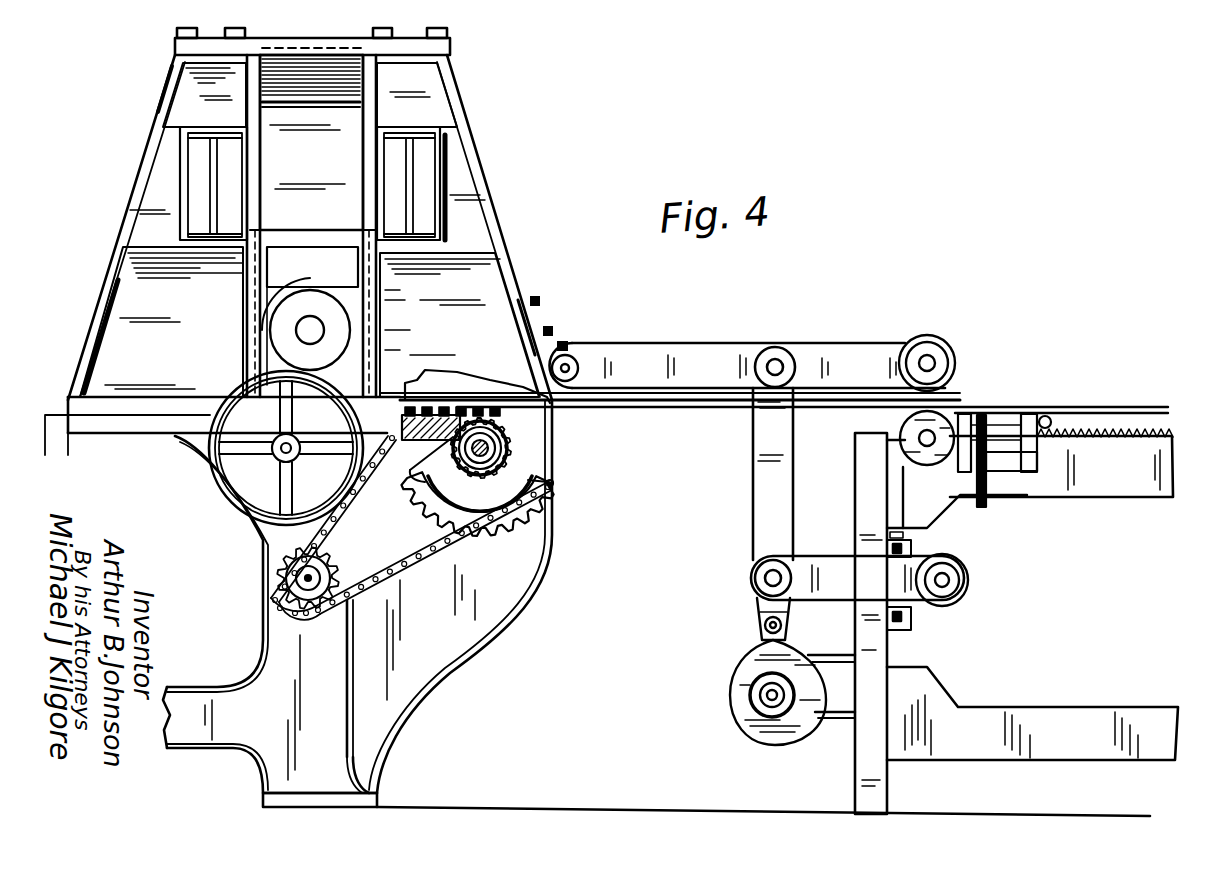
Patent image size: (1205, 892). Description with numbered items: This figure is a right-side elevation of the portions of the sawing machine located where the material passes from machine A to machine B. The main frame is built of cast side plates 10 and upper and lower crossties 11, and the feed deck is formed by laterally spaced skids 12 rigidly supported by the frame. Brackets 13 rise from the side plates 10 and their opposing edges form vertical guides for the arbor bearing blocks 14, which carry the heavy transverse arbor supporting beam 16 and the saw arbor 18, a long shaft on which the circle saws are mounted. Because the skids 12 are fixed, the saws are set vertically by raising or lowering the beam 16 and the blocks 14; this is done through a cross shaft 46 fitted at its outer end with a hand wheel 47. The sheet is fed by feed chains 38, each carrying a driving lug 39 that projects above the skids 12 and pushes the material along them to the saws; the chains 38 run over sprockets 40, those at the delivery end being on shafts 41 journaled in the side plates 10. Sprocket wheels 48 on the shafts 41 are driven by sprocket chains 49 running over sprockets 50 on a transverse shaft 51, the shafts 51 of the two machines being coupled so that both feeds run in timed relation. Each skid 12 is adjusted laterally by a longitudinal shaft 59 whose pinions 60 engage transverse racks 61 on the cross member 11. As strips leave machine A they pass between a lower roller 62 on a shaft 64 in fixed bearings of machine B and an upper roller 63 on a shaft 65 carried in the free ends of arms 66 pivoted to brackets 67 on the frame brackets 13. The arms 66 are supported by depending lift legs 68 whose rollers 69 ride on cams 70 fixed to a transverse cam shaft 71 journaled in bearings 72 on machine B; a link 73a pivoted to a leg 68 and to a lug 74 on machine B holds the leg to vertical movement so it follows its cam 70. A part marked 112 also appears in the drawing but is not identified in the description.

The side plates 10 is at (540, 640).
The crossties 11 is at (1110, 485).
The skids 12 is at (497, 395).
The brackets 13 is at (497, 222).
The arbor bearing blocks 14 is at (266, 343).
The arbor supporting beam 16 is at (311, 142).
The saw arbor 18 is at (300, 330).
The feed chains 38 is at (480, 448).
The driving lug 39 is at (437, 390).
The sprockets 40 is at (512, 422).
The sprocket shafts 41 is at (530, 470).
The cross shaft 46 is at (283, 451).
The wheel 47 is at (340, 492).
The sprocket wheels 48 is at (543, 507).
The sprocket chains 49 is at (433, 561).
The sprockets 50 is at (355, 598).
The transverse shaft 51 is at (306, 579).
The shaft 59 is at (1047, 420).
The pinions 60 is at (1049, 425).
The racks 61 is at (1142, 428).
The lower roller 62 is at (912, 462).
The upper roller 63 is at (928, 335).
The shaft 64 is at (937, 467).
The shaft 65 is at (930, 363).
The arms 66 is at (748, 365).
The brackets 67 is at (578, 344).
The lift legs 68 is at (773, 474).
The rollers 69 is at (760, 628).
The cams 70 is at (780, 740).
The cam shaft 71 is at (765, 695).
The bearings 72 is at (840, 722).
The link 73a is at (857, 578).
The lug 74 is at (968, 575).
The I-beam 112 is at (414, 193).